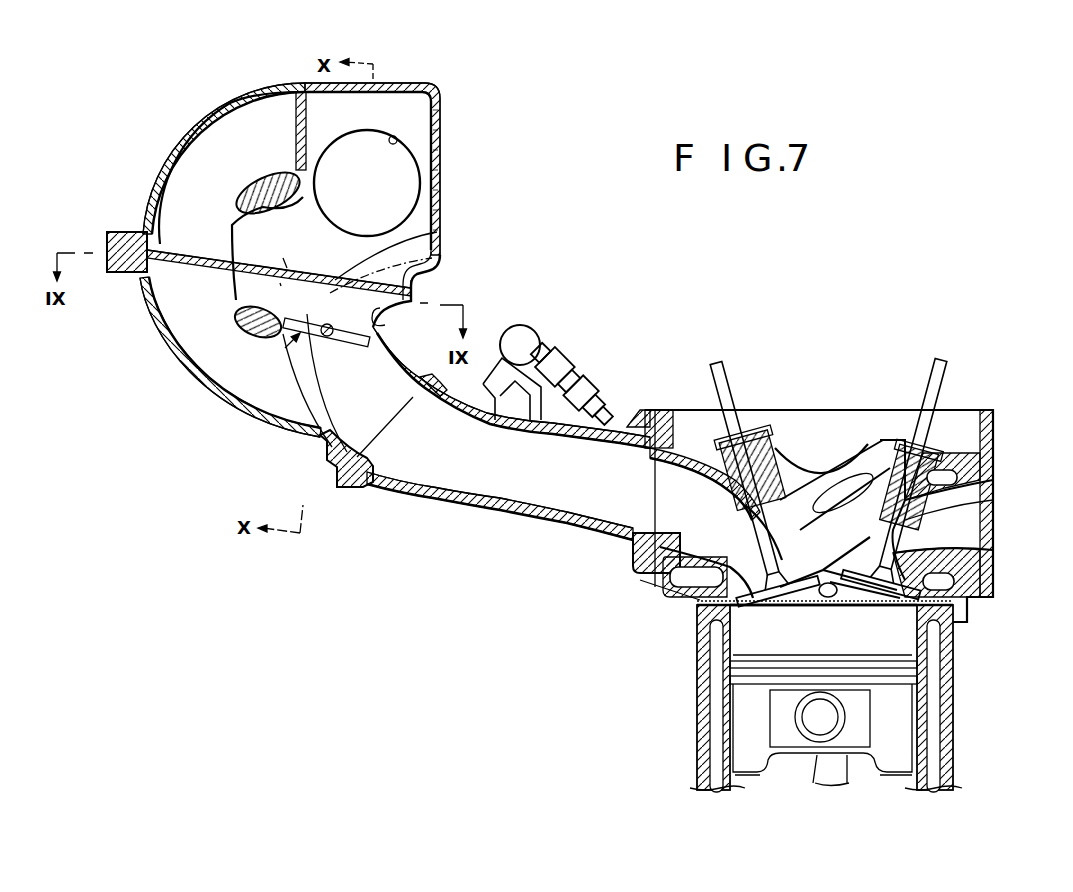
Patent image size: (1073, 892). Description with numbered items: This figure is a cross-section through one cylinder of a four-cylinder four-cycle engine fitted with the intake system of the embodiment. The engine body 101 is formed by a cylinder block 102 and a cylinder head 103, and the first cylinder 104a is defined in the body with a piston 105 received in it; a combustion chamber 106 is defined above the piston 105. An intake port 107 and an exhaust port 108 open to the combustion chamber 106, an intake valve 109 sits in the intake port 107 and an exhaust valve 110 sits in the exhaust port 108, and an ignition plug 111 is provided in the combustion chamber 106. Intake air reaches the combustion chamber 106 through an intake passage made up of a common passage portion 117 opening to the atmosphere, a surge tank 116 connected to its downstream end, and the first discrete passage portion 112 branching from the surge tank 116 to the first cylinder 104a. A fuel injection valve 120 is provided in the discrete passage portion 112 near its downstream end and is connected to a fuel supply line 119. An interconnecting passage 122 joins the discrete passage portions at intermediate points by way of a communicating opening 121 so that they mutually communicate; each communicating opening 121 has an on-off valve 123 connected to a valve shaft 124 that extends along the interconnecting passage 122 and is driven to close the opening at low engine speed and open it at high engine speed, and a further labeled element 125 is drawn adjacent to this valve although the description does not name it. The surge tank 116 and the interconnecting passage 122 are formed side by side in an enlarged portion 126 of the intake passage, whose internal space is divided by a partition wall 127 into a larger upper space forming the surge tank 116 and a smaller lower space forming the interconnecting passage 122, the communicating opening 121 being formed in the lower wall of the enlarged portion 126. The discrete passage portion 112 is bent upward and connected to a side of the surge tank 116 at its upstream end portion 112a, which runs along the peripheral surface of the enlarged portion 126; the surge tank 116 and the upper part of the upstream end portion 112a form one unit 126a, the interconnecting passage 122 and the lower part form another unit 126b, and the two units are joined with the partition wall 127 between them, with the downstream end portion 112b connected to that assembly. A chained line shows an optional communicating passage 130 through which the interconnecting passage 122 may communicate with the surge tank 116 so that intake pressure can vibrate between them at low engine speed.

The engine body 101 is at (697, 705).
The cylinder block 102 is at (955, 757).
The cylinder head 103 is at (982, 478).
The first cylinder 104a is at (745, 778).
The piston 105 is at (890, 708).
The combustion chamber 106 is at (830, 637).
The intake port 107 is at (662, 575).
The exhaust port 108 is at (905, 567).
The intake valve 109 is at (700, 603).
The exhaust valve 110 is at (990, 590).
The ignition plug 111 is at (836, 593).
The first discrete passage portion 112 is at (307, 442).
The upstream end portion 112a is at (170, 210).
The downstream end portion 112b is at (535, 490).
The surge tank 116 is at (428, 128).
The common passage portion 117 is at (397, 138).
The fuel supply line 119 is at (533, 328).
The fuel injection valve 120 is at (610, 400).
The communicating opening 121 is at (385, 325).
The interconnecting passage 122 is at (412, 304).
The on-off valve 123 is at (362, 338).
The valve shaft 124 is at (300, 375).
The control valve 125 is at (283, 338).
The enlarged portion 126 is at (447, 171).
The unit 126a is at (228, 106).
The unit 126b is at (158, 346).
The partition wall 127 is at (437, 232).
The communicating passage 130 is at (432, 258).